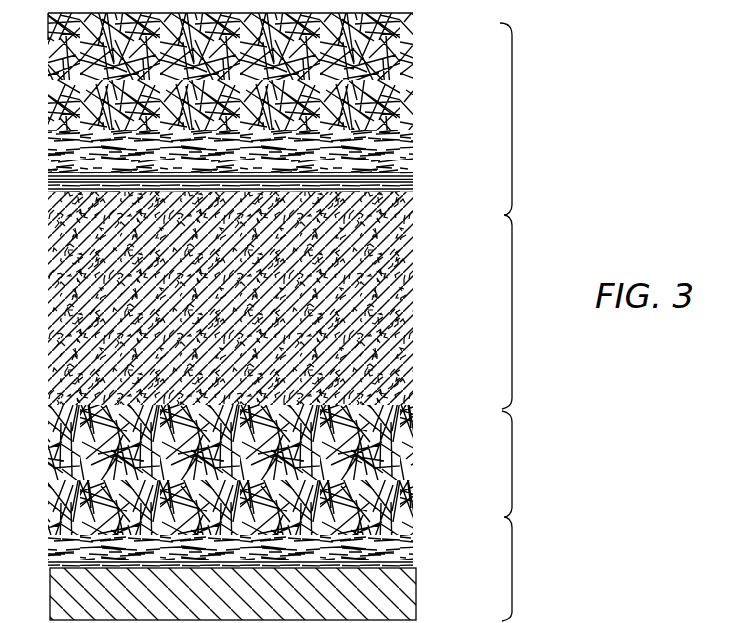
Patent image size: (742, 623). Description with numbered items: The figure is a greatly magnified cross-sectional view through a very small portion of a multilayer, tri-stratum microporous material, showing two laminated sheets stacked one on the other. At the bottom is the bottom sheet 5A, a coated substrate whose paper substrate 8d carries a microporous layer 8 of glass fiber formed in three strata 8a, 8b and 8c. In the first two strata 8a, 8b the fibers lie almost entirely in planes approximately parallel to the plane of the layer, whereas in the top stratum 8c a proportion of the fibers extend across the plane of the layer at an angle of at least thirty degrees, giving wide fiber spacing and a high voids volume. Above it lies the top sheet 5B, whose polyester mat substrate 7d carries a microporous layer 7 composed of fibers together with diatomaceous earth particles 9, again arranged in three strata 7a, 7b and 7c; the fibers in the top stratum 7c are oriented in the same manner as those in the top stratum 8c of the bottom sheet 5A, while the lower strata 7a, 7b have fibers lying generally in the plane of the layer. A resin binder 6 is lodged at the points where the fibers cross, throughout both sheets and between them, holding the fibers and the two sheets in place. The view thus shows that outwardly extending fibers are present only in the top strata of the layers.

The bottom sheet 5A is at (538, 516).
The top sheet 5B is at (537, 216).
The resin binder 6 is at (395, 30).
The microporous layer 7 is at (267, 209).
The first stratum 7a is at (400, 186).
The second stratum 7b is at (398, 160).
The top stratum 7c is at (398, 78).
The polyester mat substrate 7d is at (388, 295).
The microporous layer 8 is at (264, 512).
The first stratum 8a is at (403, 563).
The second stratum 8b is at (400, 548).
The top stratum 8c is at (398, 455).
The paper substrate 8d is at (408, 593).
The diatomaceous earth particles 9 is at (48, 22).